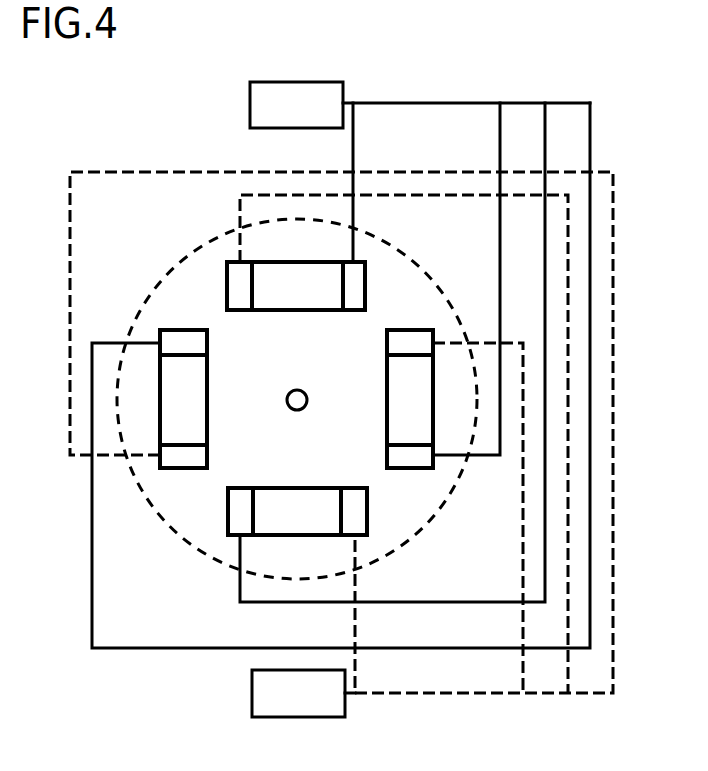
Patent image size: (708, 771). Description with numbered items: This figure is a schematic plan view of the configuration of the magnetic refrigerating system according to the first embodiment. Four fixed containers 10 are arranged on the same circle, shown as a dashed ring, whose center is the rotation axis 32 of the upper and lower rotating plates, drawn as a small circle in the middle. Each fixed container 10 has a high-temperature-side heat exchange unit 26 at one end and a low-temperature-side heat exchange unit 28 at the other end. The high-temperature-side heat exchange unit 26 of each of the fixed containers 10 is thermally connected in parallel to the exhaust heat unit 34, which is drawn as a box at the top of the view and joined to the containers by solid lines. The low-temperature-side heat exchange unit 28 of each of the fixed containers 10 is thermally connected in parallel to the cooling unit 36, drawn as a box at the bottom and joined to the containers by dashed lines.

The fixed container 10 is at (395, 399).
The high-temperature-side heat exchange unit 26 is at (360, 292).
The low-temperature-side heat exchange unit 28 is at (232, 292).
The rotation axis 32 is at (286, 402).
The exhaust heat unit 34 is at (257, 105).
The cooling unit 36 is at (263, 700).